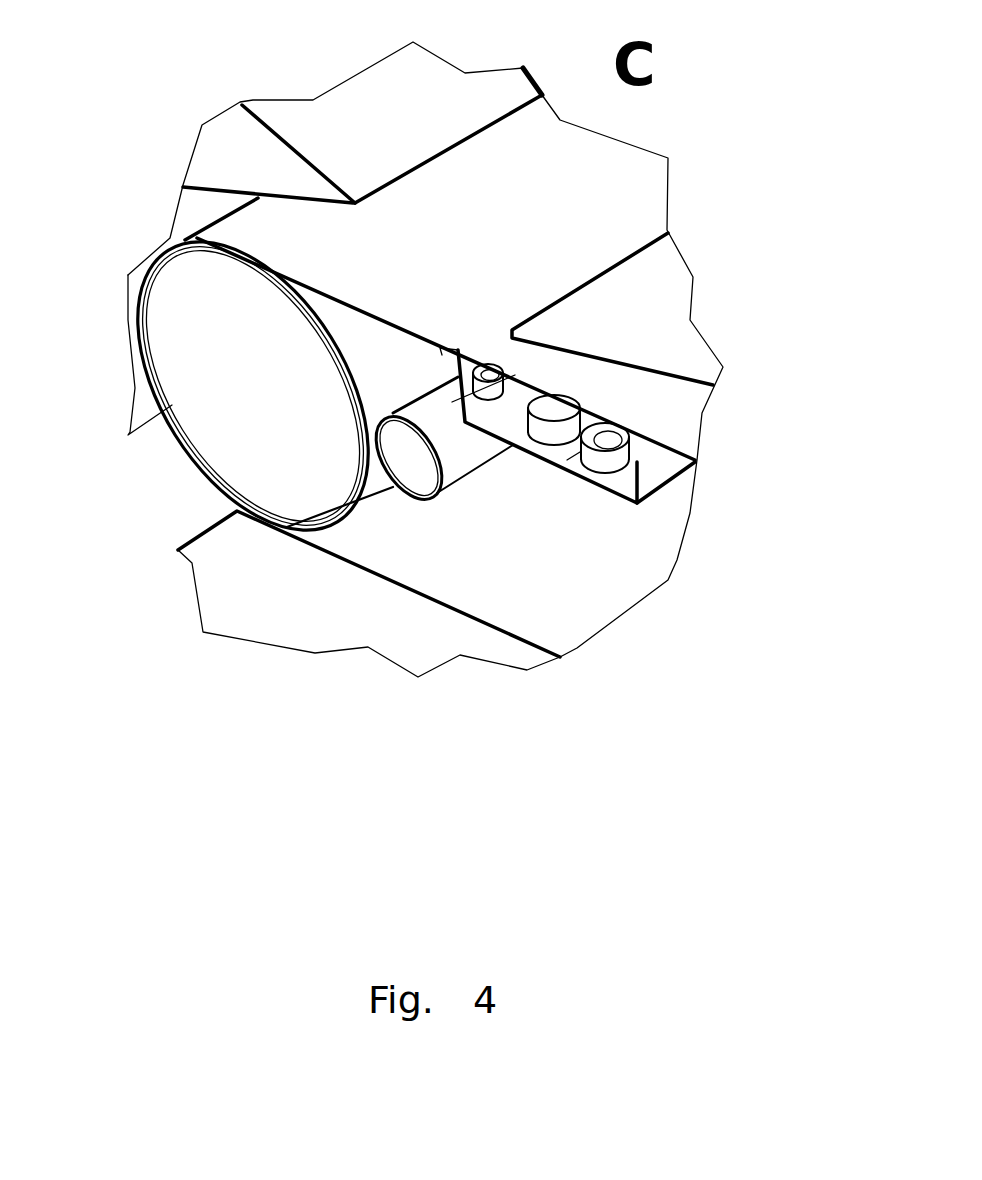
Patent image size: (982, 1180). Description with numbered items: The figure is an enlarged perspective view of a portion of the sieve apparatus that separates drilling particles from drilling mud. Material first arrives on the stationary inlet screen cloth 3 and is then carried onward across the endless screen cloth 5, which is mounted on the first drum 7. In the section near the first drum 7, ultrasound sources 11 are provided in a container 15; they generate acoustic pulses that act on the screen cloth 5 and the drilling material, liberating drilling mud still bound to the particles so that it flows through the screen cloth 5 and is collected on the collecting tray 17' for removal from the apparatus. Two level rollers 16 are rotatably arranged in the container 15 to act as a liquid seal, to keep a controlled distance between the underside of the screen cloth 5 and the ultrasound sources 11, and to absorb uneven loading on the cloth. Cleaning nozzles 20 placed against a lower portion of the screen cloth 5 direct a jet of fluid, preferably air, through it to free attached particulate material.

The stationary inlet screen cloth 3 is at (287, 148).
The endless screen cloth 5 is at (358, 313).
The first drum 7 is at (343, 383).
The ultrasound sources 11 is at (520, 423).
The container 15 is at (667, 490).
The level rollers 16 is at (497, 386).
The collecting tray 17' is at (648, 232).
The cleaning nozzles 20 is at (420, 497).